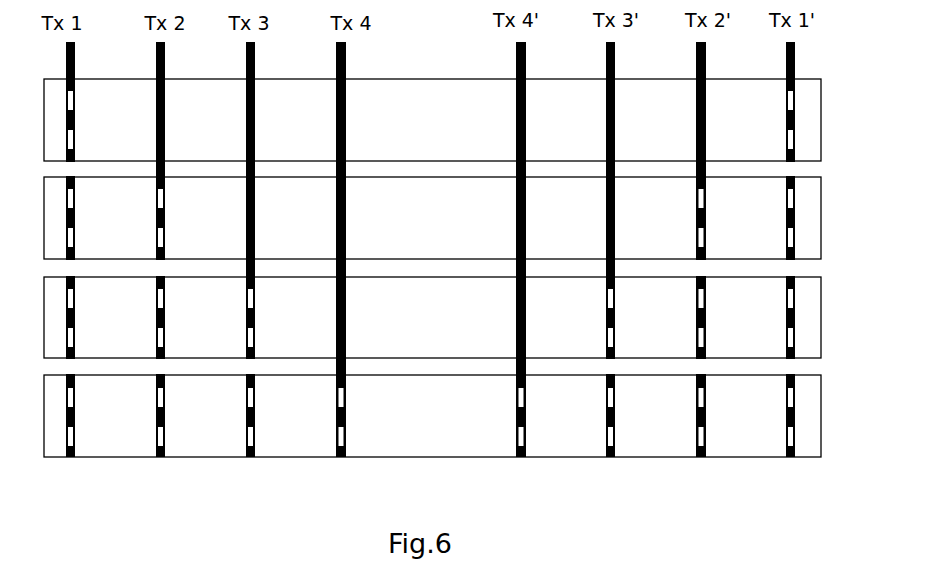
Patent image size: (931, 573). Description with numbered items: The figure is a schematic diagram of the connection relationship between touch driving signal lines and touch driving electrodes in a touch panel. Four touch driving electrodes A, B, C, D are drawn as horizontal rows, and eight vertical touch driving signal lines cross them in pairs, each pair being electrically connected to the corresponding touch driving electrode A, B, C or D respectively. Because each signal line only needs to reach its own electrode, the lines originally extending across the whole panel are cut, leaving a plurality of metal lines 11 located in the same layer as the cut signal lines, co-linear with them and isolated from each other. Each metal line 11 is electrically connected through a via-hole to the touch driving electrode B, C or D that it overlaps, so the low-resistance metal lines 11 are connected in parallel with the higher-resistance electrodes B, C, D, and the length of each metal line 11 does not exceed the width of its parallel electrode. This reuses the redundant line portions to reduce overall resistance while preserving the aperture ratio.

The metal line 11 is at (109, 277).
The touch driving electrode A is at (432, 120).
The touch driving electrode B is at (432, 218).
The touch driving electrode C is at (432, 317).
The touch driving electrode D is at (432, 416).